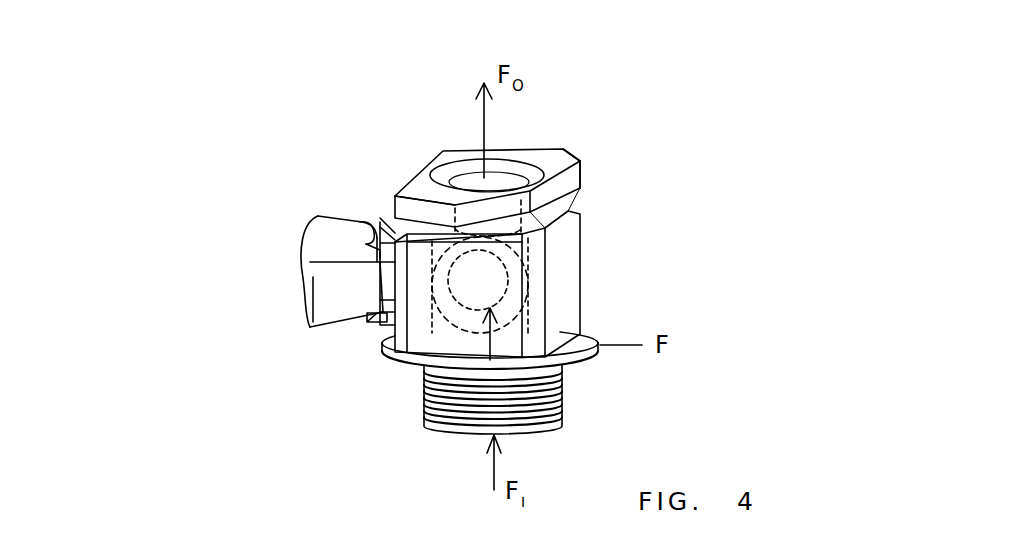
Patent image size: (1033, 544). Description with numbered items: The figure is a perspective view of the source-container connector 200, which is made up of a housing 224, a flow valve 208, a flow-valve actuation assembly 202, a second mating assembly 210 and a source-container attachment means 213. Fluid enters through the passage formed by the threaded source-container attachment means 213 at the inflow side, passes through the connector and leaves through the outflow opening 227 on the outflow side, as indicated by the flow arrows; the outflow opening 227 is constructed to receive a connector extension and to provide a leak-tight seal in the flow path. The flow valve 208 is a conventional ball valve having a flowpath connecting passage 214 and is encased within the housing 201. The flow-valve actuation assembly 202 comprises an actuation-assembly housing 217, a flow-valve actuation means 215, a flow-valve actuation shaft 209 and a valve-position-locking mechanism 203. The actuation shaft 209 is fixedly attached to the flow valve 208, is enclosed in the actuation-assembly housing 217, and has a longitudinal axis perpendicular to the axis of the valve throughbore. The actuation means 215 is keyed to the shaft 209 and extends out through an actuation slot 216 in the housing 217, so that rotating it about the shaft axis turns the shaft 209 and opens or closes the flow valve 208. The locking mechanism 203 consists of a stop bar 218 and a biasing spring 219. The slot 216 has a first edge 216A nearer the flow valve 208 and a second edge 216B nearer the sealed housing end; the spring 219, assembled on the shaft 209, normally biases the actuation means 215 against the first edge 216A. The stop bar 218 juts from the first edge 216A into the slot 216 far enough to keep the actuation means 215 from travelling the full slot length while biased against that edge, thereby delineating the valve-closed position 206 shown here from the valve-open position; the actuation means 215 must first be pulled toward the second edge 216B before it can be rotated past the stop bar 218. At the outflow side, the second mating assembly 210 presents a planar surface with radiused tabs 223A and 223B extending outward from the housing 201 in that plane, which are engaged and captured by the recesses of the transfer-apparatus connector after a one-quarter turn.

The source-container connector 200 is at (577, 94).
The housing 201 is at (565, 312).
The flow-valve actuation assembly 202 is at (298, 188).
The valve-position-locking mechanism 203 is at (345, 232).
The valve-closed position 206 is at (392, 270).
The flow valve 208 is at (535, 297).
The flow-valve actuation shaft 209 is at (378, 342).
The second mating assembly 210 is at (528, 157).
The source-container attachment means 213 is at (548, 402).
The flowpath connecting passage 214 is at (508, 262).
The flow-valve actuation means 215 is at (372, 312).
The actuation slot 216 is at (380, 255).
The first edge 216A is at (387, 322).
The second edge 216B is at (362, 222).
The actuation-assembly housing 217 is at (320, 243).
The stop bar 218 is at (383, 222).
The biasing spring 219 is at (386, 248).
The tab 223A is at (563, 149).
The tab 223B is at (410, 200).
The housing 224 is at (481, 312).
The outflow opening 227 is at (582, 167).